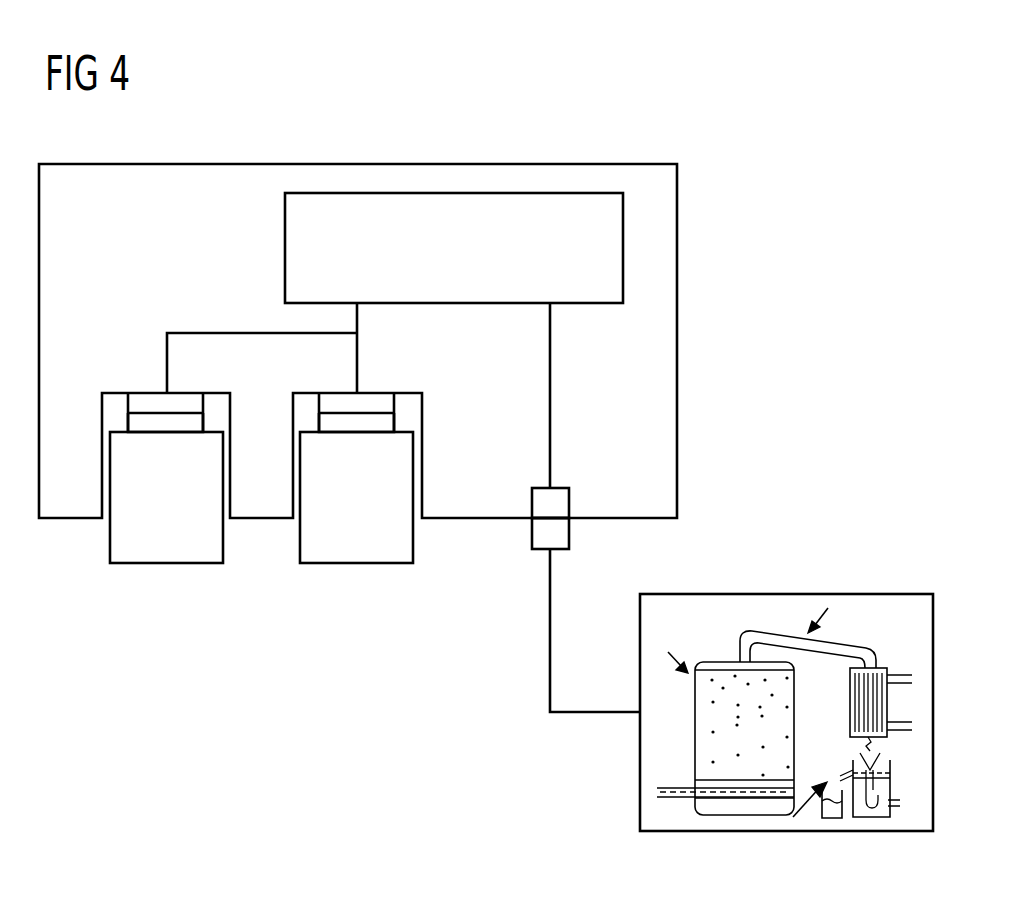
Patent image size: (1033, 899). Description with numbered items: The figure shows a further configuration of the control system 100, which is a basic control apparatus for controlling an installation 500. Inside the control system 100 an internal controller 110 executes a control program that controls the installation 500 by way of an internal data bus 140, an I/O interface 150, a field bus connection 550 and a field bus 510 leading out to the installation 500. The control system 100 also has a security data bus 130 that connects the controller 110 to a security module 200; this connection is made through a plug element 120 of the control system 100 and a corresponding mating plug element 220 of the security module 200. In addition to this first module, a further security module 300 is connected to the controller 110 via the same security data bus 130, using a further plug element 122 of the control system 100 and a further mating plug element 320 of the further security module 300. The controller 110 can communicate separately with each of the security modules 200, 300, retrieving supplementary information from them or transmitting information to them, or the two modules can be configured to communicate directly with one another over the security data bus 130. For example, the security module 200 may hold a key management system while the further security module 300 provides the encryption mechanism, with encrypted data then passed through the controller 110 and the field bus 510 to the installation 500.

The control system 100 is at (544, 164).
The controller 110 is at (285, 245).
The plug element 120 is at (376, 393).
The further plug element 122 is at (147, 393).
The security data bus 130 is at (240, 333).
The internal data bus 140 is at (555, 415).
The I/O interface 150 is at (560, 505).
The security module 200 is at (307, 538).
The mating plug element 220 is at (384, 423).
The further security module 300 is at (117, 540).
The further mating plug element 320 is at (192, 423).
The installation 500 is at (804, 594).
The field bus 510 is at (594, 712).
The field bus connection 550 is at (560, 535).